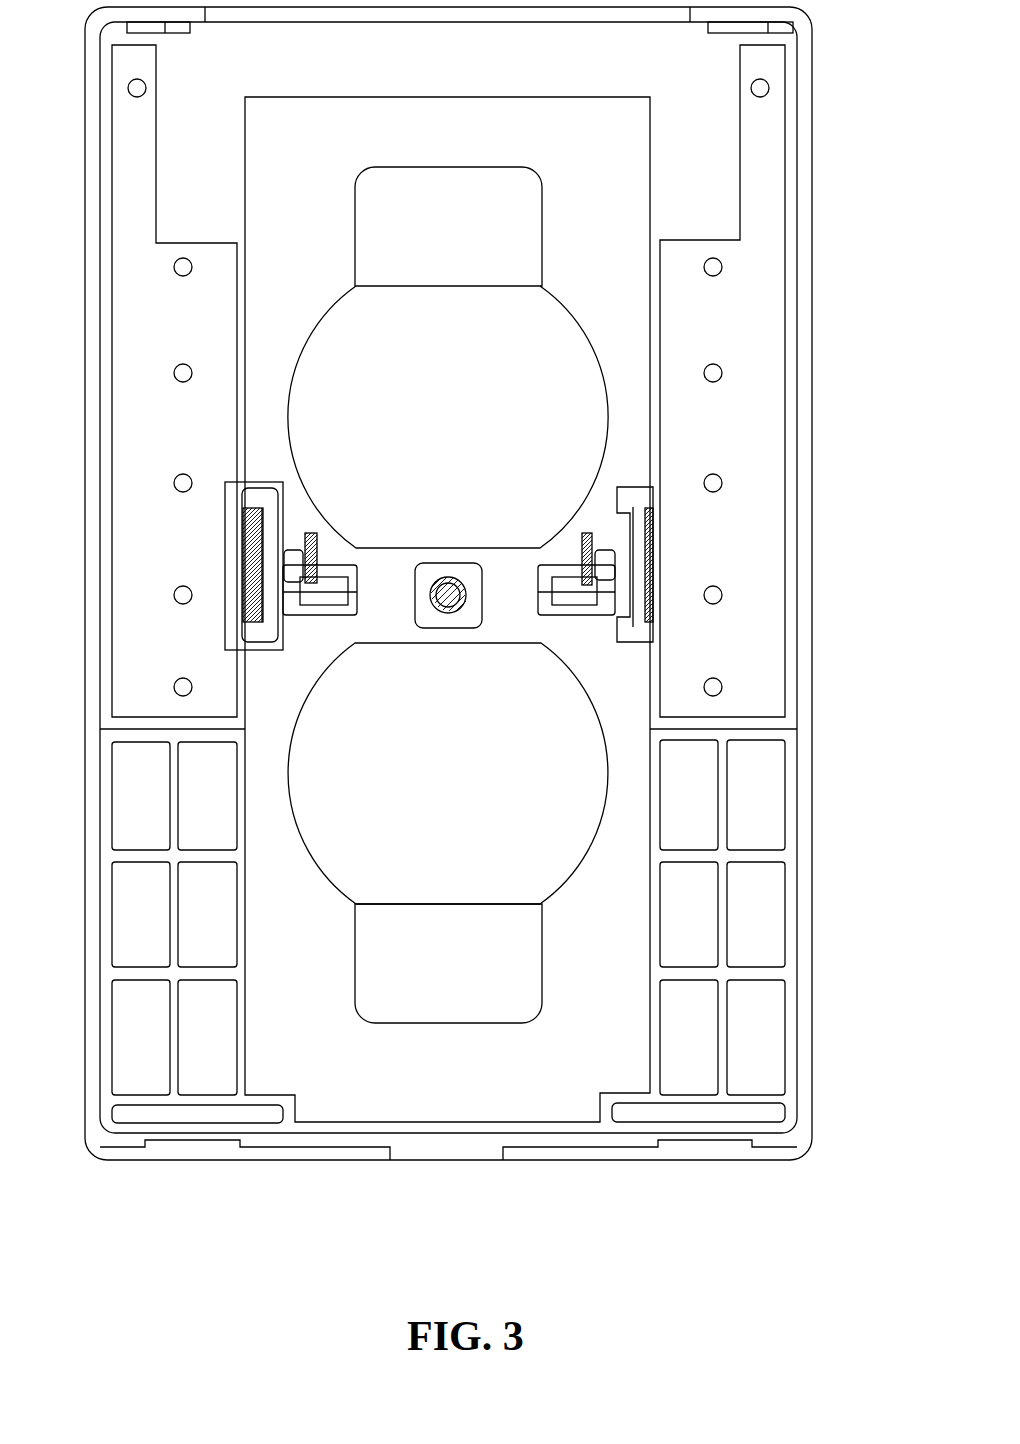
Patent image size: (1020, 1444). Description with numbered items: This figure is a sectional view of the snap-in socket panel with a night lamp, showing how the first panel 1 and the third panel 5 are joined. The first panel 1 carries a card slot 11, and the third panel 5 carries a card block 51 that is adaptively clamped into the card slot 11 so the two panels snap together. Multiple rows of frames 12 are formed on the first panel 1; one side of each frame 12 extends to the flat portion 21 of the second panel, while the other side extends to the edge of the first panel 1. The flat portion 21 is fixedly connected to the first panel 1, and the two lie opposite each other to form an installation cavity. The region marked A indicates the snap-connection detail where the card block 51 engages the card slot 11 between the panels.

The first panel 1 is at (340, 1047).
The third panel 5 is at (93, 1047).
The card slot 11 is at (580, 617).
The frame 12 is at (133, 927).
The flat portion 21 is at (143, 670).
The card block 51 is at (613, 620).
The detail region A is at (225, 567).